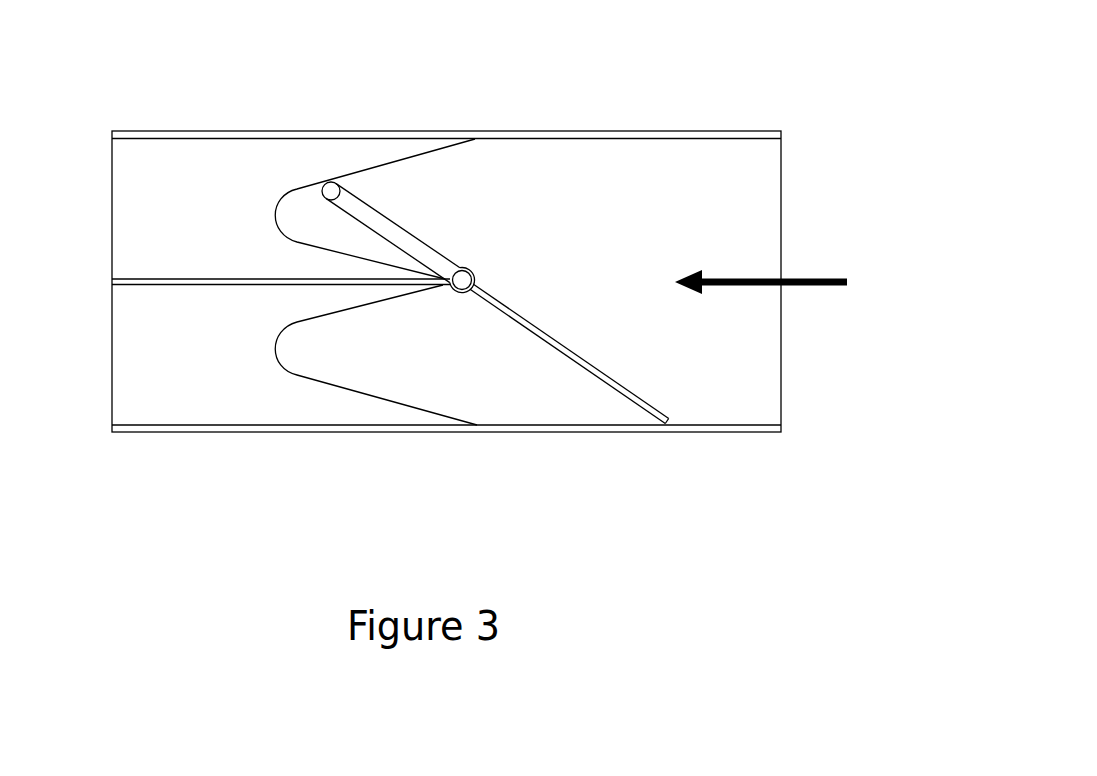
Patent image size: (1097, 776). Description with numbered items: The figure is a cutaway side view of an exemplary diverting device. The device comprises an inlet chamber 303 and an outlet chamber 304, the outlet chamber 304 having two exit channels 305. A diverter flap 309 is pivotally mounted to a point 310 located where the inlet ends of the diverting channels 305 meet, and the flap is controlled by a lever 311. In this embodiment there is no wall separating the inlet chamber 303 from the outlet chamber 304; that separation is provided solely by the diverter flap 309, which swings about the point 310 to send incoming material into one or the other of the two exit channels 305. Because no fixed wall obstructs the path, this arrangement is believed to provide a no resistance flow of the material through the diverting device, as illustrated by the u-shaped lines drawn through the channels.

The inlet chamber 303 is at (583, 184).
The outlet chamber 304 is at (140, 131).
The exit channels 305 is at (198, 375).
The diverter flap 309 is at (560, 342).
The point 310 is at (472, 268).
The lever 311 is at (380, 198).